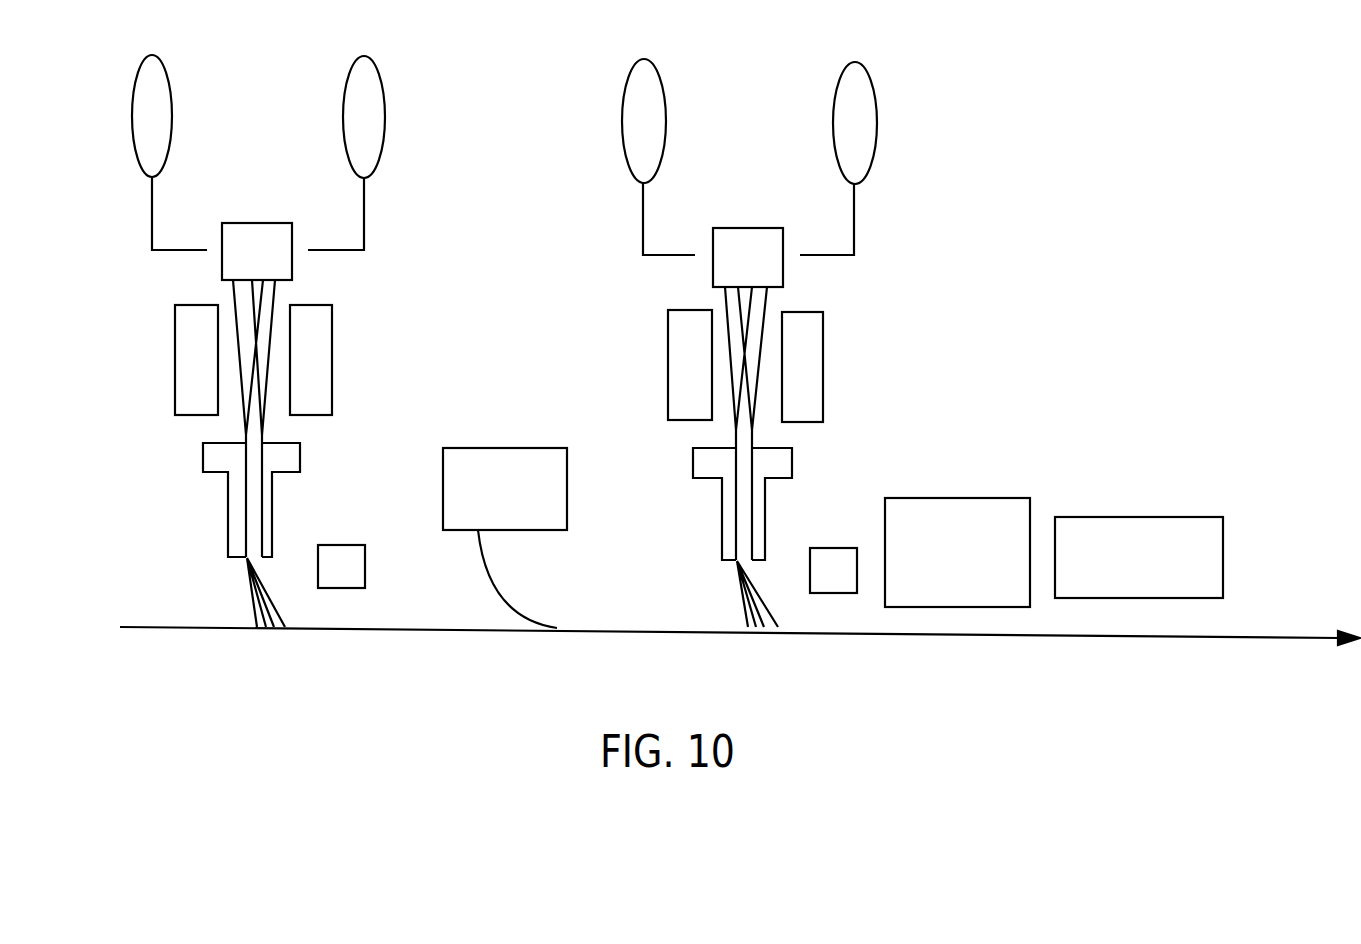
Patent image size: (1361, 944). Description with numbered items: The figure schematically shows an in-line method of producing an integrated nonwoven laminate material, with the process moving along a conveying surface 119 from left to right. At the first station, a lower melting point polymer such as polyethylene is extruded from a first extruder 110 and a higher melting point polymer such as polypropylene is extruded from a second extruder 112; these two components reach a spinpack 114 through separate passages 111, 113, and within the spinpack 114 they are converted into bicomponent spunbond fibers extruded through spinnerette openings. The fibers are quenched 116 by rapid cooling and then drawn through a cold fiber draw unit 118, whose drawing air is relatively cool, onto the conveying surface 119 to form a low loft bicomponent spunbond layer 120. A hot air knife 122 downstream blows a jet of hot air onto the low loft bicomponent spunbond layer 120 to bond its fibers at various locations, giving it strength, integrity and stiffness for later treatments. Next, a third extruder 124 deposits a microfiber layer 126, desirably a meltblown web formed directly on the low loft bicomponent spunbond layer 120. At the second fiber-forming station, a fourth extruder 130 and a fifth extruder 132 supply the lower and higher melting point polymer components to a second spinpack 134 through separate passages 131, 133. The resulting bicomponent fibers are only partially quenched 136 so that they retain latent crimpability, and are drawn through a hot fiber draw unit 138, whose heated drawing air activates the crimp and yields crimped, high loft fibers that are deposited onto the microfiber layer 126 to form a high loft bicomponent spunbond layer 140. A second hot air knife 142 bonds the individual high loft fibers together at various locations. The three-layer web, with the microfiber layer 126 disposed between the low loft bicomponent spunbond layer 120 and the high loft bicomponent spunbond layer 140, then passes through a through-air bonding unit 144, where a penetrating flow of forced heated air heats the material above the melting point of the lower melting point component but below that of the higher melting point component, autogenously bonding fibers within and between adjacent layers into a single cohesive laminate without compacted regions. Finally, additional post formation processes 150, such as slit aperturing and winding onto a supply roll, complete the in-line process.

The first extruder 110 is at (162, 92).
The passage 111 is at (152, 210).
The second extruder 112 is at (372, 93).
The passage 113 is at (364, 210).
The spinpack 114 is at (283, 238).
The quench 116 is at (185, 345).
The cold fiber draw unit 118 is at (272, 500).
The conveying surface 119 is at (195, 627).
The low loft bicomponent spunbond layer 120 is at (275, 600).
The hot air knife 122 is at (352, 566).
The third extruder 124 is at (505, 460).
The microfiber layer 126 is at (493, 580).
The fourth extruder 130 is at (652, 97).
The passage 131 is at (644, 213).
The fifth extruder 132 is at (862, 99).
The passage 133 is at (855, 215).
The second spinpack 134 is at (778, 240).
The quench 136 is at (678, 325).
The hot fiber draw unit 138 is at (780, 462).
The high loft bicomponent spunbond layer 140 is at (738, 588).
The hot air knife 142 is at (822, 555).
The through-air bonding unit 144 is at (985, 510).
The post formation processes 150 is at (1178, 530).